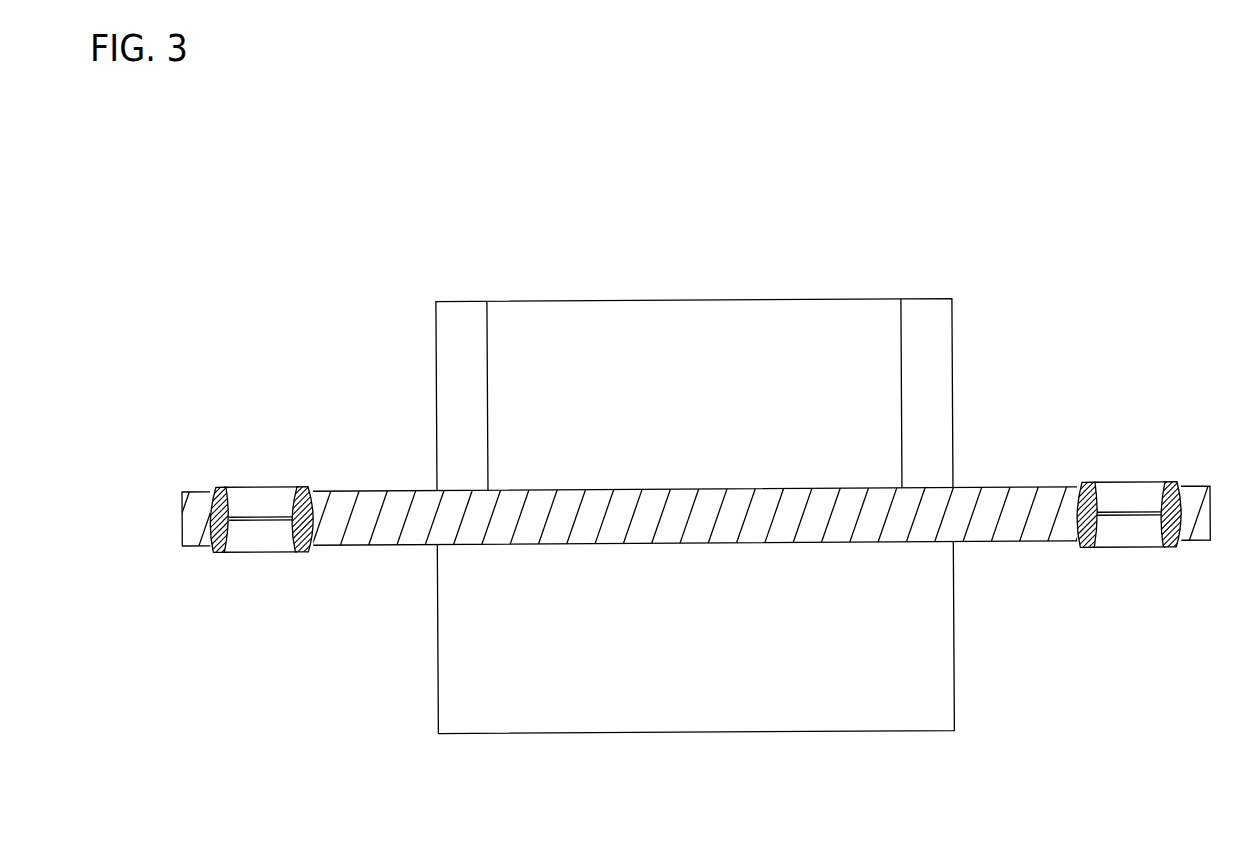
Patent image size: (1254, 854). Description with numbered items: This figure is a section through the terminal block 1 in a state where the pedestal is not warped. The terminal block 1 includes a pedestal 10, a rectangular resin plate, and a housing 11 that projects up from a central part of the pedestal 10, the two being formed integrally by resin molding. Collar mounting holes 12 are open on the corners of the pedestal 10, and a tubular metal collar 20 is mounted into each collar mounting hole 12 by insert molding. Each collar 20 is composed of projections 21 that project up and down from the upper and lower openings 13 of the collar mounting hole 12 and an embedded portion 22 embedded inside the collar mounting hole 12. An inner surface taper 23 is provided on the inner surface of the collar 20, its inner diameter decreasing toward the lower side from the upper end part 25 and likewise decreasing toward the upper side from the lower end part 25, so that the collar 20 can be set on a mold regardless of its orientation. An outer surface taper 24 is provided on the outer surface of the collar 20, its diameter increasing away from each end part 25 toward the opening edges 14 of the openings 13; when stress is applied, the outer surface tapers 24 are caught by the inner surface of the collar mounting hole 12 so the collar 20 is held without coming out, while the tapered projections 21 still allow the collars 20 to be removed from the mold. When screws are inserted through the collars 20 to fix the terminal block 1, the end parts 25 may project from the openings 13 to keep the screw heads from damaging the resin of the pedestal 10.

The terminal block 1 is at (591, 170).
The pedestal 10 is at (407, 492).
The housing 11 is at (655, 317).
The collar mounting hole 12 is at (292, 497).
The opening 13 is at (1130, 466).
The opening edge 14 is at (1082, 482).
The collar 20 is at (322, 478).
The projection 21 is at (312, 488).
The embedded portion 22 is at (313, 527).
The inner surface taper 23 is at (232, 497).
The outer surface taper 24 is at (213, 498).
The end part 25 is at (213, 489).